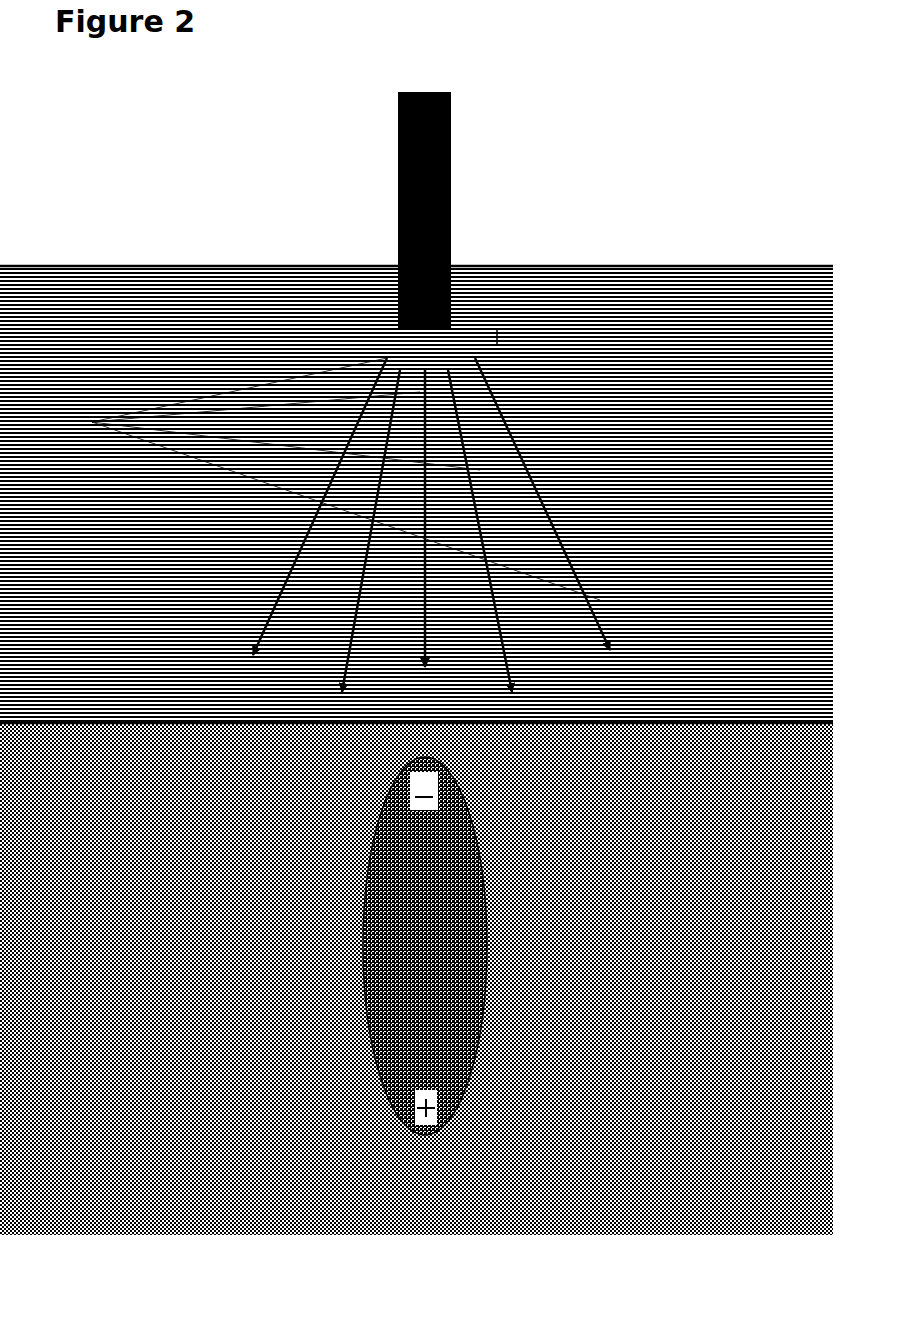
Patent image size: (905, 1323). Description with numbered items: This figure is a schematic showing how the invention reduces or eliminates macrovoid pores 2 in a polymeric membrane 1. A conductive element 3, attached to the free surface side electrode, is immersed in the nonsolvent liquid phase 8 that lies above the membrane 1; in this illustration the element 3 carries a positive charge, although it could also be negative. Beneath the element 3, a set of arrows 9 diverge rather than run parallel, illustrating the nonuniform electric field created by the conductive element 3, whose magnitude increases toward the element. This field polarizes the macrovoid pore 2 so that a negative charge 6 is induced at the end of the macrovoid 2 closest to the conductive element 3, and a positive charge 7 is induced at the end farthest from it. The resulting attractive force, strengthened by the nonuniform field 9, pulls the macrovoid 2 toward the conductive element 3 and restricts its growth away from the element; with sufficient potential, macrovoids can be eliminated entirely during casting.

The polymeric membrane 1 is at (416, 979).
The macrovoid pore 2 is at (425, 960).
The conductive element 3 is at (398, 181).
The negative charge 6 is at (420, 786).
The positive charge 7 is at (416, 1108).
The nonsolvent liquid phase 8 is at (416, 494).
The nonuniform electric field arrows 9 is at (104, 418).